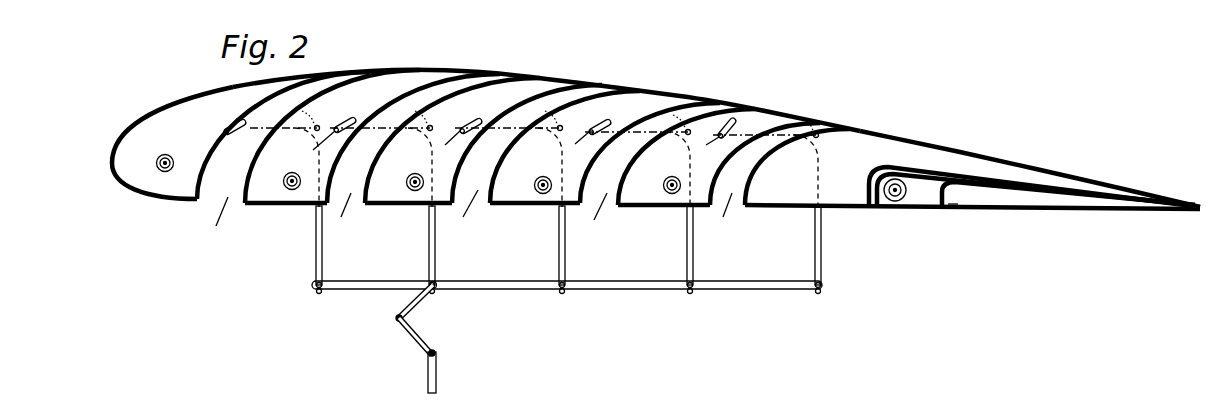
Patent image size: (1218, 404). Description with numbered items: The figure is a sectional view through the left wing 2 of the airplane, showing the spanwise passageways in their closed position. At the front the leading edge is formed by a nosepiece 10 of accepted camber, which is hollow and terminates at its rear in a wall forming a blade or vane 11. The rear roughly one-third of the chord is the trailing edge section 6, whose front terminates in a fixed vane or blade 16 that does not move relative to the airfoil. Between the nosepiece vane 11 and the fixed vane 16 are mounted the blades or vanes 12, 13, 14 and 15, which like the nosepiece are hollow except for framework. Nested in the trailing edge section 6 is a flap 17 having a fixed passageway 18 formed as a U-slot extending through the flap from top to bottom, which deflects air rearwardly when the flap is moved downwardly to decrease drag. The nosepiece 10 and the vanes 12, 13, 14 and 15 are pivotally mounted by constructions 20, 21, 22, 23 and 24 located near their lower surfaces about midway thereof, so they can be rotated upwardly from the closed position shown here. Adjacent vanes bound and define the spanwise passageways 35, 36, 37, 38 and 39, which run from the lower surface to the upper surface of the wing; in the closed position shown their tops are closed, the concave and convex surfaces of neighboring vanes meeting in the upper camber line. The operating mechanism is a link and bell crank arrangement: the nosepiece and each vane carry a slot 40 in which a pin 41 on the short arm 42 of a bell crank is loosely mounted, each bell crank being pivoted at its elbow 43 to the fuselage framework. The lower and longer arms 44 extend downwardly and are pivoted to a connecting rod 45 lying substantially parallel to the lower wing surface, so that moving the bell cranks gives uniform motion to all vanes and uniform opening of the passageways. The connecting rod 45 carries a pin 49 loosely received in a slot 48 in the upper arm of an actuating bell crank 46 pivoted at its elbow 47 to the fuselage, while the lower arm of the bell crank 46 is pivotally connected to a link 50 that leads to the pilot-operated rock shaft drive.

The wing 2 is at (453, 67).
The trailing edge section 6 is at (977, 153).
The nosepiece 10 is at (170, 109).
The blade or vane 11 is at (257, 112).
The blade or vane 12 is at (388, 118).
The blade or vane 13 is at (503, 121).
The blade or vane 14 is at (631, 113).
The blade or vane 15 is at (772, 121).
The vane or blade 16 is at (1021, 174).
The flap 17 is at (1055, 207).
The fixed passageway 18 is at (960, 212).
The pivotal mounting construction 20 is at (156, 162).
The pivotal mounting construction 21 is at (283, 183).
The pivotal mounting construction 22 is at (406, 184).
The pivotal mounting construction 23 is at (534, 186).
The pivotal mounting construction 24 is at (663, 186).
The spanwise passageway 35 is at (214, 223).
The spanwise passageway 36 is at (345, 221).
The spanwise passageway 37 is at (467, 220).
The spanwise passageway 38 is at (595, 221).
The spanwise passageway 39 is at (719, 222).
The slot 40 is at (228, 122).
The pin 41 is at (223, 130).
The short arm 42 is at (543, 167).
The pivotal point 43 is at (556, 137).
The longer arm 44 is at (315, 264).
The connecting rod 45 is at (650, 289).
The actuating bell crank 46 is at (413, 340).
The elbow pivot 47 is at (403, 319).
The slot 48 is at (427, 298).
The pin 49 is at (438, 283).
The link 50 is at (438, 378).